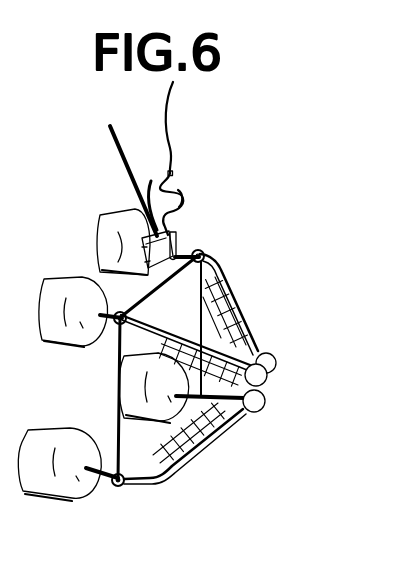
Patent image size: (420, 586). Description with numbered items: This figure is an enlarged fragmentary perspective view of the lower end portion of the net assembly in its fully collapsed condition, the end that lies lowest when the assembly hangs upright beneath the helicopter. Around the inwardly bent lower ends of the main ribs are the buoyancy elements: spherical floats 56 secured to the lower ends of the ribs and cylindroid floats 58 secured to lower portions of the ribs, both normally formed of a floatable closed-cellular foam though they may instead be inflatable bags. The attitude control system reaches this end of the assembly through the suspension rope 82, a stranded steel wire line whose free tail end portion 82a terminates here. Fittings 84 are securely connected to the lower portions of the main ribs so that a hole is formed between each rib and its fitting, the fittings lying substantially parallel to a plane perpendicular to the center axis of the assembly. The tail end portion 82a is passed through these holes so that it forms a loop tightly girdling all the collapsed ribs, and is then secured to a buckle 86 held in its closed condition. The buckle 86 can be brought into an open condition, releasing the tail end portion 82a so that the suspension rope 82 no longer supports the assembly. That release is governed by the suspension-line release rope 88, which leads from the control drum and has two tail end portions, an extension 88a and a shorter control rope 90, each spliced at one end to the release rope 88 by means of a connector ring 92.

The spherical floats 56 is at (267, 404).
The cylindroid floats 58 is at (102, 234).
The suspension rope 82 is at (123, 164).
The tail end portion 82a is at (148, 183).
The fittings 84 is at (205, 253).
The buckle 86 is at (179, 240).
The suspension-line release rope 88 is at (170, 126).
The extension 88a is at (185, 194).
The control rope 90 is at (153, 181).
The connector ring 92 is at (175, 173).